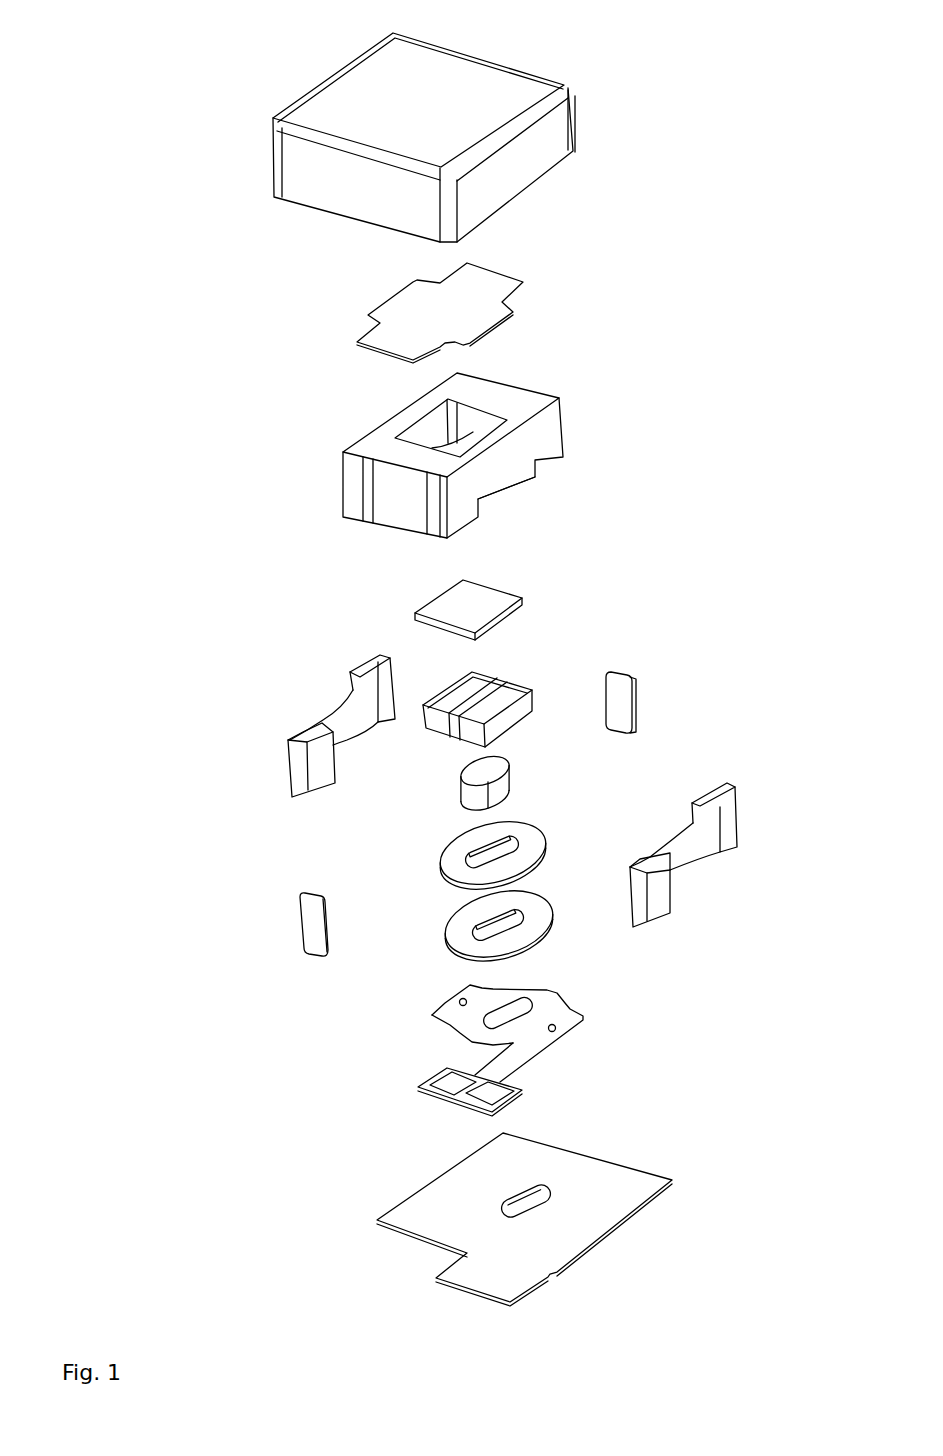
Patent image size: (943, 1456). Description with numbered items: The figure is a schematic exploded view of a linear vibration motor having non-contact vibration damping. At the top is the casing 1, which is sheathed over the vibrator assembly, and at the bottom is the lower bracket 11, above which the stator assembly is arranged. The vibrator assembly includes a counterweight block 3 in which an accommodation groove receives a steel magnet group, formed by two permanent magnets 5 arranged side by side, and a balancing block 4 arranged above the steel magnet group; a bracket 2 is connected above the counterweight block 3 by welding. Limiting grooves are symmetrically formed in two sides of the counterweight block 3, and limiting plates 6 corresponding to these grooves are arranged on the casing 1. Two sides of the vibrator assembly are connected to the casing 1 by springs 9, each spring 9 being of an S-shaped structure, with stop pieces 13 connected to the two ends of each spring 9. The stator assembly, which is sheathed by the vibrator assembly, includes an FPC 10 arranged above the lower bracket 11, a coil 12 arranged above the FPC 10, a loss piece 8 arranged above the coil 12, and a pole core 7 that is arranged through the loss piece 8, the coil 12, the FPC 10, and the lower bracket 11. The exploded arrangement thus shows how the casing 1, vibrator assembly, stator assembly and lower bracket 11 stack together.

The casing 1 is at (483, 78).
The bracket 2 is at (493, 327).
The counterweight block 3 is at (522, 442).
The balancing block 4 is at (482, 602).
The permanent magnet 5 is at (497, 698).
The limiting plate 6 is at (620, 683).
The pole core 7 is at (500, 782).
The loss piece 8 is at (525, 853).
The spring 9 is at (703, 848).
The FPC 10 is at (550, 1027).
The lower bracket 11 is at (583, 1188).
The coil 12 is at (467, 940).
The stop piece 13 is at (305, 736).